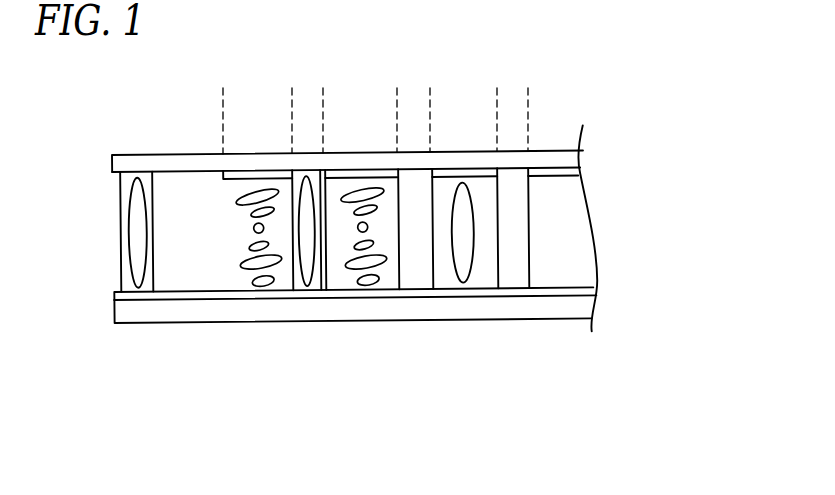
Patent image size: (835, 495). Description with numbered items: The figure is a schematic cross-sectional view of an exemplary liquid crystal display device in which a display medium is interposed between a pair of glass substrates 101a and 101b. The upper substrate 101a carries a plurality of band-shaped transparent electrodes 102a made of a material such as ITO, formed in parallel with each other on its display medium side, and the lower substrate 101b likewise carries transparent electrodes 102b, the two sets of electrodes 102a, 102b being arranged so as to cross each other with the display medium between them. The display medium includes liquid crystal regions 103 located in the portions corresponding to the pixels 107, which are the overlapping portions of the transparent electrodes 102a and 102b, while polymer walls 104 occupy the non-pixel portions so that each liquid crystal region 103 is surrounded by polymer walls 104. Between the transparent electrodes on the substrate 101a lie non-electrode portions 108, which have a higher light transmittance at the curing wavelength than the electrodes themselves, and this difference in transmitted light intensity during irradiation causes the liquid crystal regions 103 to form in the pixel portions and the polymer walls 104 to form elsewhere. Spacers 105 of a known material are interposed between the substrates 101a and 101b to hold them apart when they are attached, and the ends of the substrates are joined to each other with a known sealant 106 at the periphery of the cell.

The substrate 101a is at (568, 151).
The substrate 101b is at (590, 310).
The transparent electrode 102a is at (256, 173).
The transparent electrode 102b is at (595, 288).
The liquid crystal region 103 is at (228, 282).
The polymer wall 104 is at (322, 285).
The spacer 105 is at (136, 287).
The sealant 106 is at (120, 210).
The pixel 107 is at (292, 88).
The non-electrode portion 108 is at (323, 88).